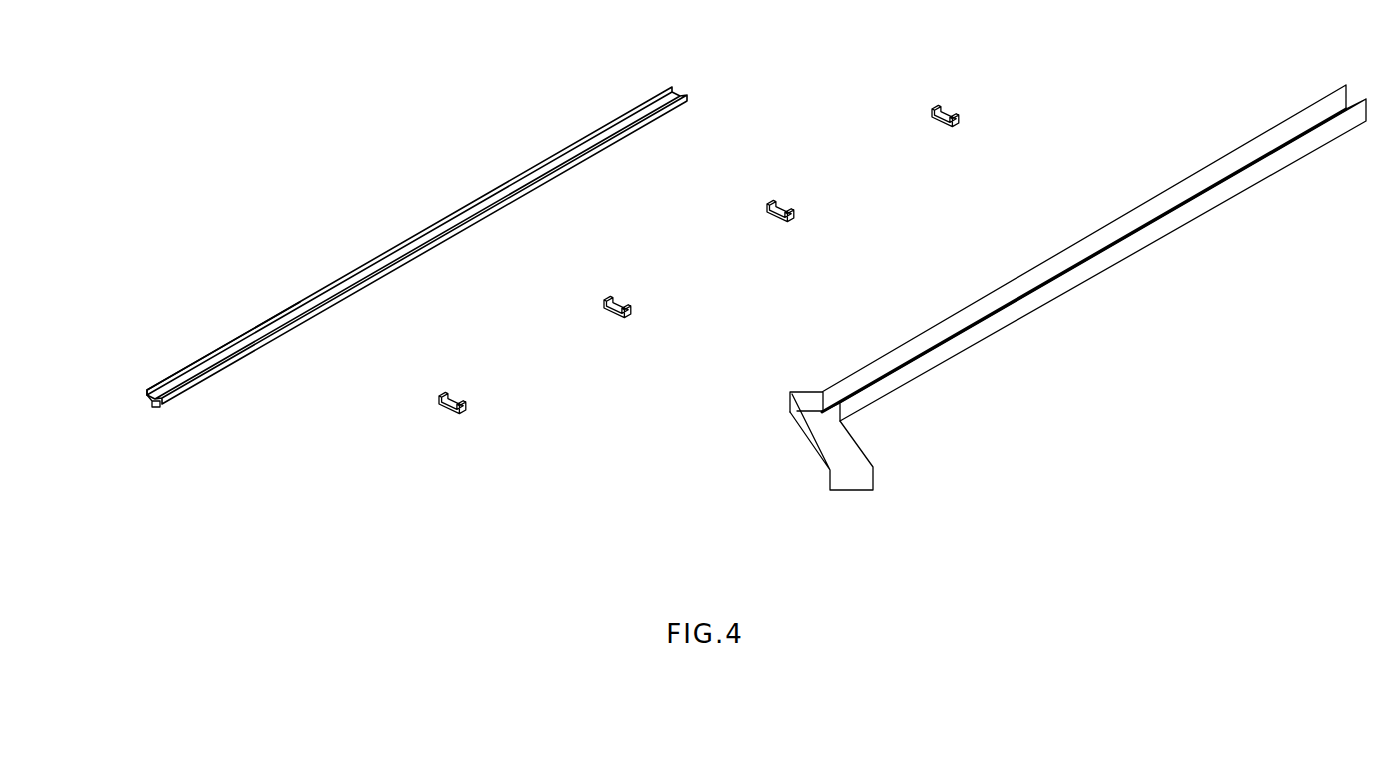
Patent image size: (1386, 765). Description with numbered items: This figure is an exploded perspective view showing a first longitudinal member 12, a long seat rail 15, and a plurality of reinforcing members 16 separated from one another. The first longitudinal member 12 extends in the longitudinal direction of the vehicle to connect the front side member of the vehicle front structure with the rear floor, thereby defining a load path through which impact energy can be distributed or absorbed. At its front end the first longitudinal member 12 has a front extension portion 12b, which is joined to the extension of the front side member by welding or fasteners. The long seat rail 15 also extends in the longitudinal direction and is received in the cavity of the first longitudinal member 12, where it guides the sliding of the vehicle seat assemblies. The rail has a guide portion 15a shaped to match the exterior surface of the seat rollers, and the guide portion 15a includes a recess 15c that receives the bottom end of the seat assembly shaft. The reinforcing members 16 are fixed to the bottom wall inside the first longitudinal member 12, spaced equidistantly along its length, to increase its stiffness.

The first longitudinal member 12 is at (1083, 311).
The front extension portion 12b is at (806, 457).
The long seat rail 15 is at (498, 172).
The guide portion 15a is at (173, 382).
The recess 15c is at (155, 410).
The reinforcing member 16 is at (622, 297).